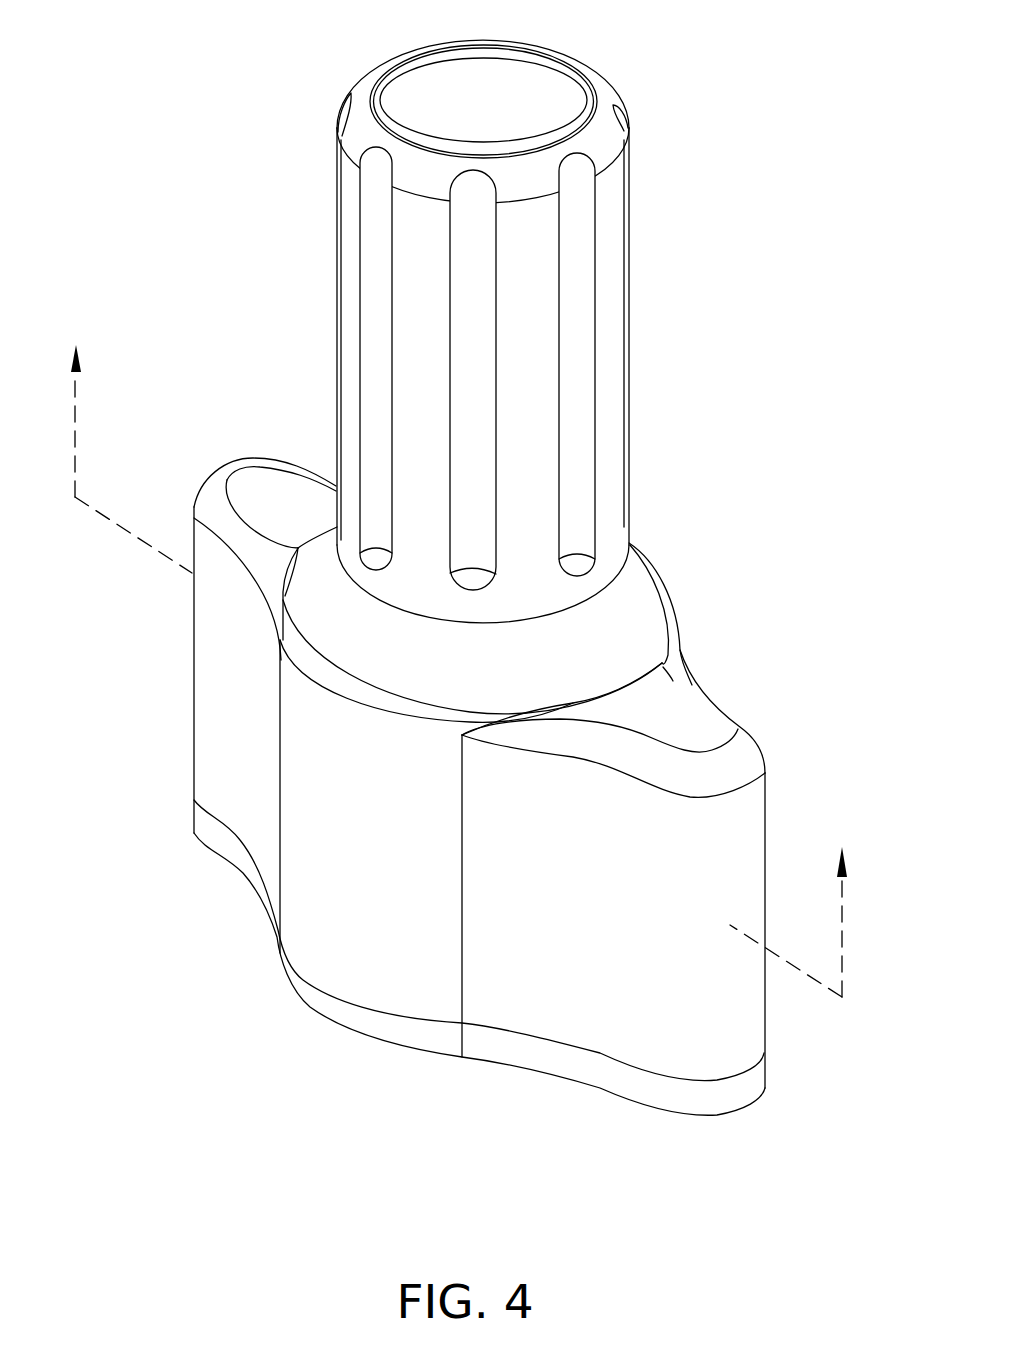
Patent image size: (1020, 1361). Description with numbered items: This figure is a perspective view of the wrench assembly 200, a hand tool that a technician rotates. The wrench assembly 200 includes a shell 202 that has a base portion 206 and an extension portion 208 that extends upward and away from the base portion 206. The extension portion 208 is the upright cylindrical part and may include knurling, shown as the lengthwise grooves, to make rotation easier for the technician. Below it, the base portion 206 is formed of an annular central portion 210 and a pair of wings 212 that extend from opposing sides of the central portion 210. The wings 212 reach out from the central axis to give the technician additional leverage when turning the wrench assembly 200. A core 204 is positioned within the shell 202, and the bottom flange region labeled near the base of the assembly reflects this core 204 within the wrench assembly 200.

The wrench assembly 200 is at (126, 92).
The shell 202 is at (195, 380).
The core 204 is at (733, 1092).
The base portion 206 is at (715, 648).
The extension portion 208 is at (302, 203).
The annular central portion 210 is at (682, 543).
The wings 212 is at (210, 553).